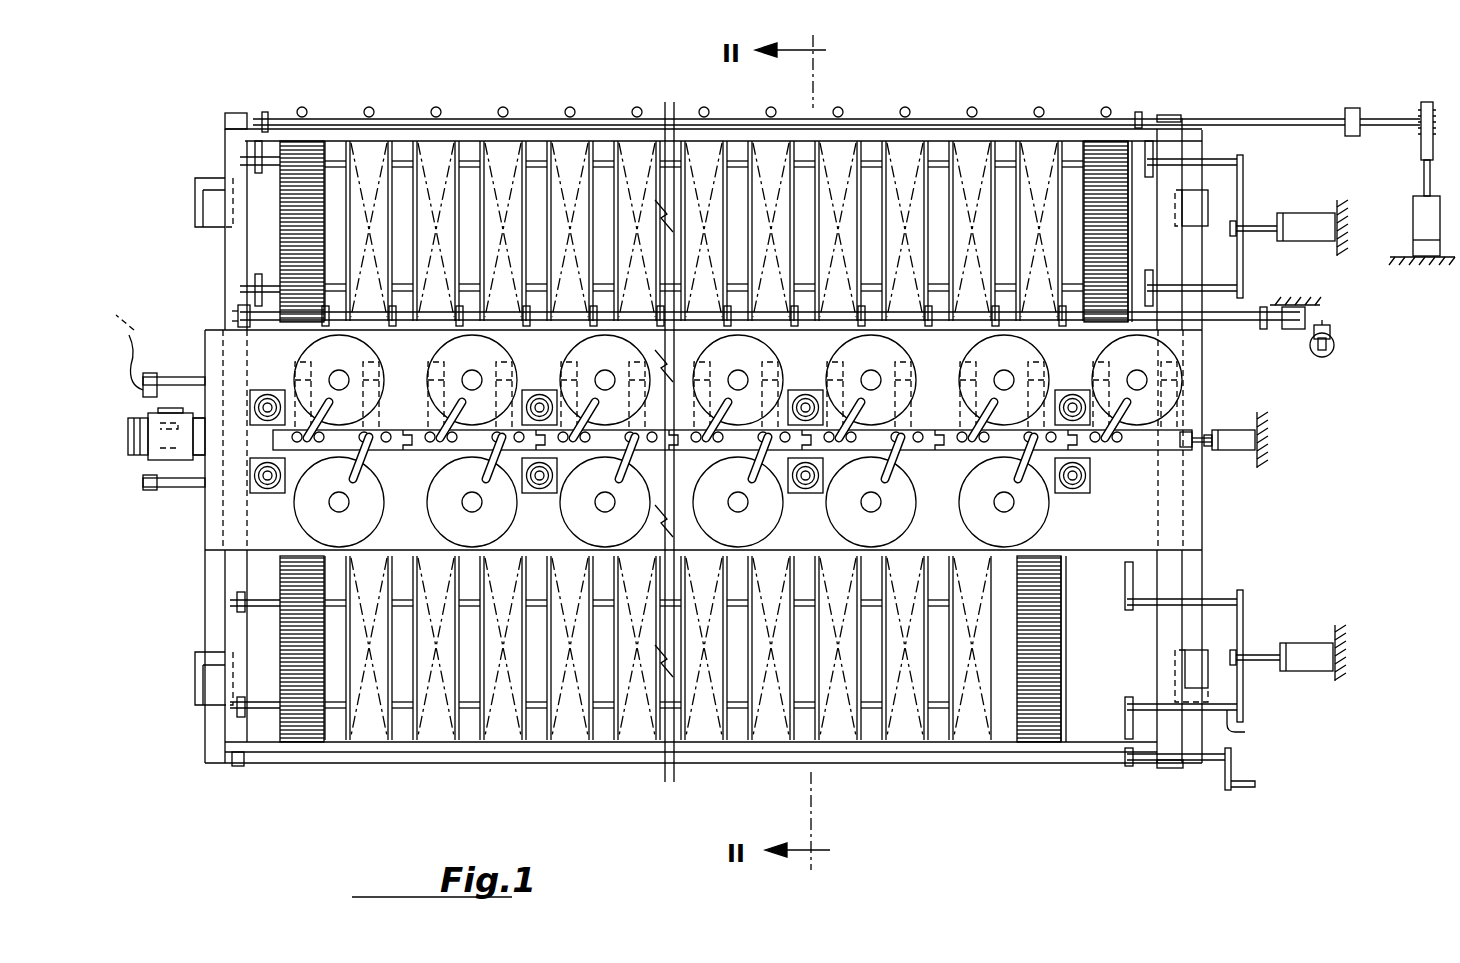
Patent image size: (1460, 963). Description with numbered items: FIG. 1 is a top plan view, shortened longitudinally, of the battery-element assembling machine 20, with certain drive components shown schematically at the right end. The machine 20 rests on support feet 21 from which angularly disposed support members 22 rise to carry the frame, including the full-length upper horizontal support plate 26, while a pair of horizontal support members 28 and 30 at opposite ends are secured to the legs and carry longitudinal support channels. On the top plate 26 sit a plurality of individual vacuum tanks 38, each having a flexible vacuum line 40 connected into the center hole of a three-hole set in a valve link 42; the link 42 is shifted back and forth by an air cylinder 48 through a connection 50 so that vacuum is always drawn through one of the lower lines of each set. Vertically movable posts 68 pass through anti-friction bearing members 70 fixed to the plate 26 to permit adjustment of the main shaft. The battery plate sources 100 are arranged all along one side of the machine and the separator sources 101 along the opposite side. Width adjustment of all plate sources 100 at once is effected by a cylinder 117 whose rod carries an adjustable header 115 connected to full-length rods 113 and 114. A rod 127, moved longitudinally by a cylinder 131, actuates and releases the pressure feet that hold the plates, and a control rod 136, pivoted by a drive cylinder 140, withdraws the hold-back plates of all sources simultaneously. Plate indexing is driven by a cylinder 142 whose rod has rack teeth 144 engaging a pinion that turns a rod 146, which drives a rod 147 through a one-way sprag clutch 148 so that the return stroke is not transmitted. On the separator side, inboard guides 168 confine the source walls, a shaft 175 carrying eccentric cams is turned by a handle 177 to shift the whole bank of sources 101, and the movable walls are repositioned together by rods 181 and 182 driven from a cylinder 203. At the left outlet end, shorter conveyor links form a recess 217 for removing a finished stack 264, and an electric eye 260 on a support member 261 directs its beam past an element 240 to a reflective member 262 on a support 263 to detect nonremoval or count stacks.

The machine 20 is at (1222, 526).
The support feet 21 is at (1210, 186).
The support members 22 is at (1195, 251).
The upper horizontal support plate 26 is at (1196, 354).
The horizontal support member 28 is at (1178, 156).
The horizontal support member 30 is at (232, 156).
The vacuum tanks 38 is at (890, 357).
The vacuum line 40 is at (888, 412).
The valve link 42 is at (940, 452).
The air cylinder 48 is at (1242, 437).
The connection 50 is at (1204, 438).
The posts 68 is at (1073, 473).
The bearing members 70 is at (1064, 395).
The battery plate sources 100 is at (360, 148).
The separator sources 101 is at (372, 748).
The rod 113 is at (1222, 168).
The rod 114 is at (1222, 288).
The header 115 is at (1245, 216).
The cylinder 117 is at (1312, 224).
The rod 127 is at (1248, 318).
The cylinder 131 is at (1300, 310).
The control rod 136 is at (1270, 330).
The drive cylinder 140 is at (1332, 342).
The cylinder 142 is at (1430, 246).
The rack teeth 144 is at (1428, 100).
The rod 146 is at (1380, 118).
The rod 147 is at (1198, 120).
The one-way sprag clutch 148 is at (1350, 108).
The inboard guides 168 is at (273, 492).
The shaft 175 is at (1203, 760).
The handle 177 is at (1252, 786).
The rod 181 is at (1217, 600).
The rod 182 is at (1228, 714).
The cylinder 203 is at (1297, 652).
The recess 217 is at (161, 422).
The coupling block 240 is at (130, 441).
The electric eye 260 is at (150, 373).
The support member 261 is at (177, 377).
The reflective member 262 is at (151, 491).
The support 263 is at (186, 489).
The finished stack 264 is at (158, 438).